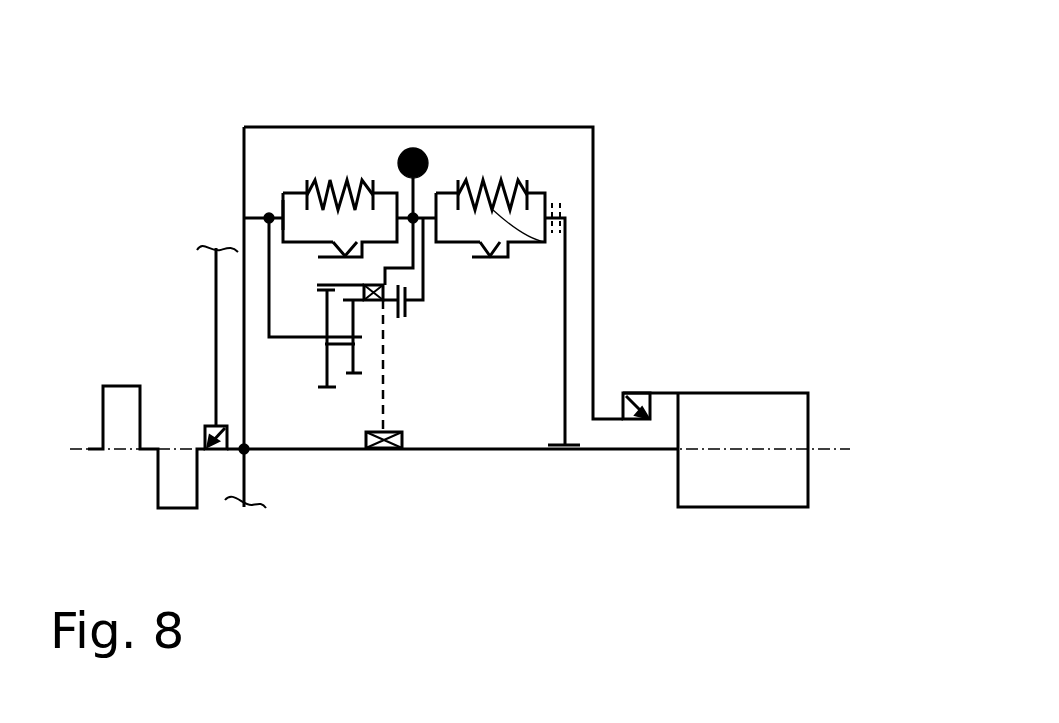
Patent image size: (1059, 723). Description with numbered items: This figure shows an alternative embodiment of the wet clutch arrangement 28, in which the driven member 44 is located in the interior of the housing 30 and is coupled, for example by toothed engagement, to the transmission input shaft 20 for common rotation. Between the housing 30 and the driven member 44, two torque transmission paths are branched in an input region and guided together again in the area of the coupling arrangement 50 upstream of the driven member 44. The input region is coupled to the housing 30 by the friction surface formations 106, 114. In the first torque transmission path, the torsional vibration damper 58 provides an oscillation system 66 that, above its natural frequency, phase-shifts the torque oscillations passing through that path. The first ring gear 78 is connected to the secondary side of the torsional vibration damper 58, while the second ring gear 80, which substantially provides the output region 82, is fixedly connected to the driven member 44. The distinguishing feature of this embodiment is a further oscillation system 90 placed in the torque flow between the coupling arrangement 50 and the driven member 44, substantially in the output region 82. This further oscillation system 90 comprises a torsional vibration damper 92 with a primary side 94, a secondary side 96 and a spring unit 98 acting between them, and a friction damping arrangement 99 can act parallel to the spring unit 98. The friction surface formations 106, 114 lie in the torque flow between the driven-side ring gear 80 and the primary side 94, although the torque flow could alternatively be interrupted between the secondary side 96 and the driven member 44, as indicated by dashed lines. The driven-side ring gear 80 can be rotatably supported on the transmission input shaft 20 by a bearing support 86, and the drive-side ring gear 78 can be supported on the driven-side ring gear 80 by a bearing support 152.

The transmission input shaft 20 is at (662, 448).
The wet clutch arrangement 28 is at (602, 84).
The housing 30 is at (596, 163).
The driven member 44 is at (574, 449).
The coupling arrangement 50 is at (325, 412).
The torsional vibration damper 58 is at (349, 150).
The oscillation system 66 is at (311, 150).
The first ring gear 78 is at (350, 284).
The second ring gear 80 is at (385, 305).
The output region 82 is at (622, 207).
The bearing support 86 is at (402, 440).
The further oscillation system 90 is at (521, 152).
The torsional vibration damper 92 is at (489, 150).
The primary side 94 is at (448, 192).
The secondary side 96 is at (543, 192).
The spring unit 98 is at (566, 236).
The friction damping arrangement 99 is at (510, 256).
The friction surface formation 106 is at (392, 314).
The friction surface formation 114 is at (410, 308).
The bearing support 152 is at (372, 286).